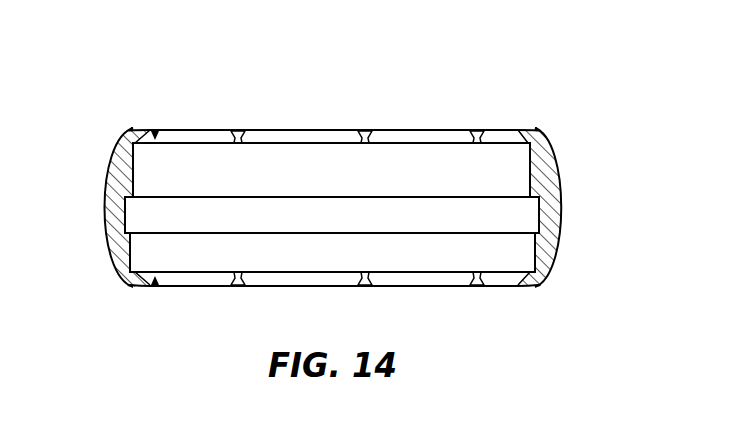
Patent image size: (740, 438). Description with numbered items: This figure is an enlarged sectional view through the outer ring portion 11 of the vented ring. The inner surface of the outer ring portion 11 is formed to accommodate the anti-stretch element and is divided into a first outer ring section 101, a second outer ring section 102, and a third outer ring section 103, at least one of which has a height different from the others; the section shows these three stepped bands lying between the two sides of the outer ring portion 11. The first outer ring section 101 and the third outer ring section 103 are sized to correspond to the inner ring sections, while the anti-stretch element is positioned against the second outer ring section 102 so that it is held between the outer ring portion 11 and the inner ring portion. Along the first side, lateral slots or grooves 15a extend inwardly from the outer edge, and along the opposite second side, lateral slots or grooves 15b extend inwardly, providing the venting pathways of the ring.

The outer ring portion 11 is at (68, 108).
The lateral slots or grooves 15a is at (238, 130).
The lateral slots or grooves 15b is at (238, 287).
The first outer ring section 101 is at (510, 167).
The second outer ring section 102 is at (519, 218).
The third outer ring section 103 is at (520, 255).